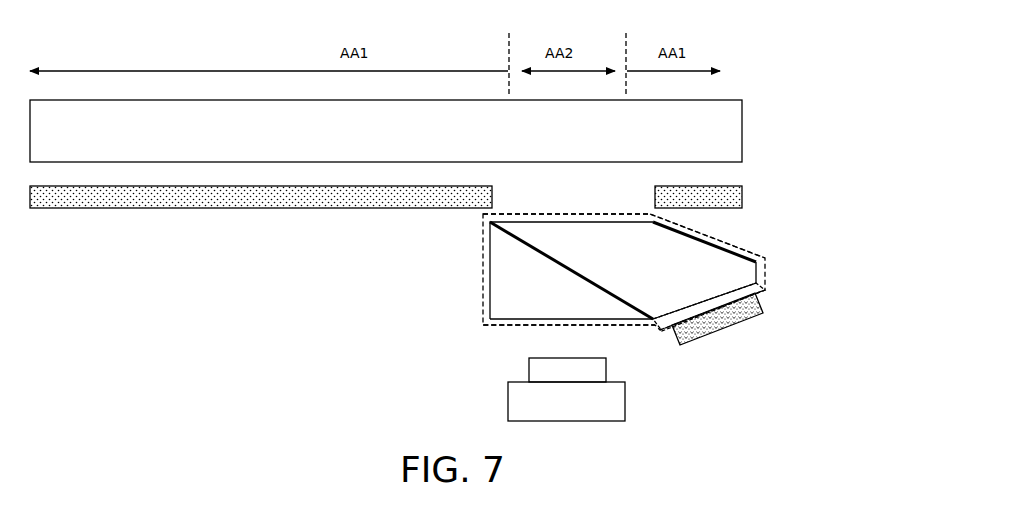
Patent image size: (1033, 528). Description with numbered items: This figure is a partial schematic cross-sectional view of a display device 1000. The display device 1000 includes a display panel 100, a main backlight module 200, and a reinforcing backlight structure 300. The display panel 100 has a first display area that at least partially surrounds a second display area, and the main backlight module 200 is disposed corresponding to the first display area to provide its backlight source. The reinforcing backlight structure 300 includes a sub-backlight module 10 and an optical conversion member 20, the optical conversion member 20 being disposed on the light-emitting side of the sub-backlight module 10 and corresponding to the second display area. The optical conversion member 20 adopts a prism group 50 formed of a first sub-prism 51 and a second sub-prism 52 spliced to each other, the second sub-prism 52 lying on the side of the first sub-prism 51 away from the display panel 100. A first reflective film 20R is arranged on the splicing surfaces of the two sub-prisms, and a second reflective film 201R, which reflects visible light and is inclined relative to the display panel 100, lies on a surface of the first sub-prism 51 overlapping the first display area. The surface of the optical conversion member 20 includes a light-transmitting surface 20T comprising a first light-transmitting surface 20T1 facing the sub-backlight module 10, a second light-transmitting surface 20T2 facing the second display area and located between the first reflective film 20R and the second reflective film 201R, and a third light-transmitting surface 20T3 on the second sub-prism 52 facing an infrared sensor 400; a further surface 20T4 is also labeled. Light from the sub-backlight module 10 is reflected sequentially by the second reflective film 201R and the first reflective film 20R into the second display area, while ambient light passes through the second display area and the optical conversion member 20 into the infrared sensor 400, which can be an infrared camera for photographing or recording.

The display device 1000 is at (664, 24).
The display panel 100 is at (730, 131).
The main backlight module 200 is at (730, 200).
The reinforcing backlight structure 300 is at (215, 219).
The sub-backlight module 10 is at (743, 318).
The optical conversion member 20 is at (665, 330).
The light-transmitting surface 20T is at (215, 286).
The first light-transmitting surface 20T1 is at (765, 300).
The second light-transmitting surface 20T2 is at (540, 221).
The third light-transmitting surface 20T3 is at (523, 319).
The fourth surface of light guide member 20T4 is at (700, 243).
The first reflective film 20R is at (602, 288).
The second reflective film 201R is at (700, 232).
The prism group 50 is at (204, 379).
The first sub-prism 51 is at (720, 266).
The second sub-prism 52 is at (507, 260).
The infrared sensor 400 is at (626, 393).